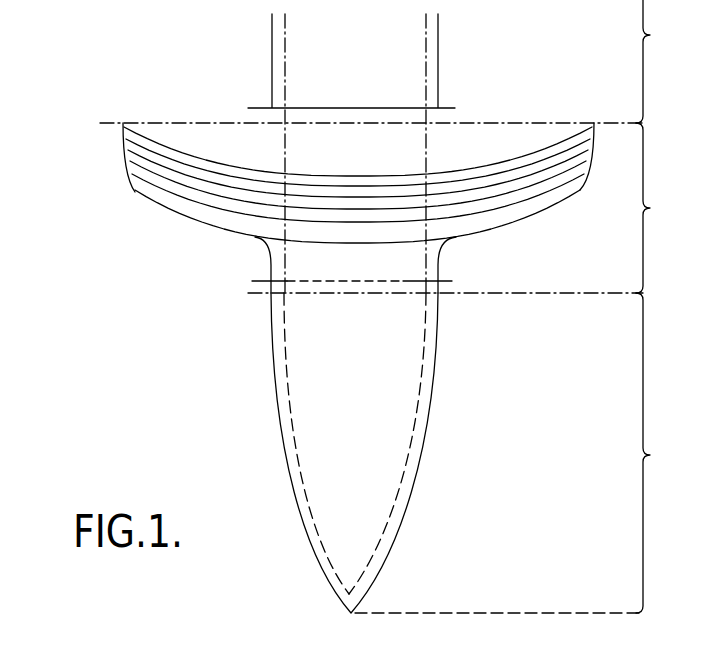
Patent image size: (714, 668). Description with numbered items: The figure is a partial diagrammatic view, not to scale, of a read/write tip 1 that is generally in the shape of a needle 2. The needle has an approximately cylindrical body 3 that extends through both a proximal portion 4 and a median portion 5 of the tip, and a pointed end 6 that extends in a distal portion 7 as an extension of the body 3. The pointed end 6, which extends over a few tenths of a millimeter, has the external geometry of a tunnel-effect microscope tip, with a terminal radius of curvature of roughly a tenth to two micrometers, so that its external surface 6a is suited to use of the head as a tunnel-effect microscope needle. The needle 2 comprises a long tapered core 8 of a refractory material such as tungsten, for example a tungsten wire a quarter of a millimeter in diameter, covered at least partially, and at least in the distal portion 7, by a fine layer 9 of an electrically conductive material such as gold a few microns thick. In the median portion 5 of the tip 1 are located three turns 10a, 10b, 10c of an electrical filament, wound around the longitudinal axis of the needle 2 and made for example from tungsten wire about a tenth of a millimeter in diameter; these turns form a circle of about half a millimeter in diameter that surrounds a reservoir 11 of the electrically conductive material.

The tip 1 is at (157, 458).
The needle 2 is at (326, 443).
The cylindrical body 3 is at (385, 53).
The proximal portion 4 is at (655, 61).
The median portion 5 is at (657, 208).
The pointed end 6 is at (373, 481).
The external surface 6a is at (392, 552).
The distal portion 7 is at (654, 453).
The core 8 is at (403, 265).
The layer 9 is at (280, 354).
The turn 10a is at (124, 134).
The turn 10b is at (152, 163).
The turn 10c is at (170, 188).
The reservoir 11 is at (203, 218).